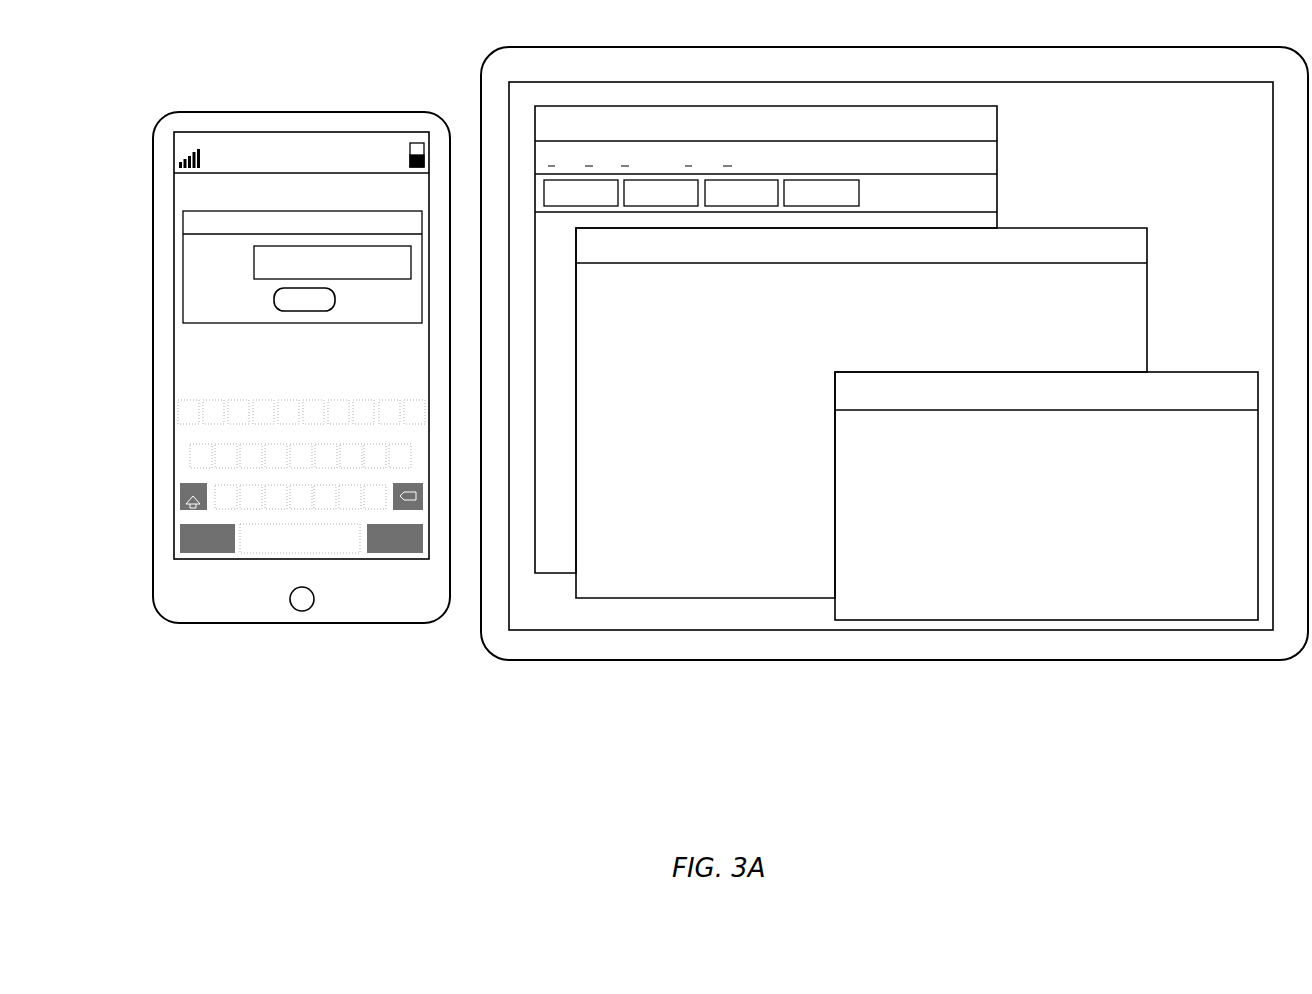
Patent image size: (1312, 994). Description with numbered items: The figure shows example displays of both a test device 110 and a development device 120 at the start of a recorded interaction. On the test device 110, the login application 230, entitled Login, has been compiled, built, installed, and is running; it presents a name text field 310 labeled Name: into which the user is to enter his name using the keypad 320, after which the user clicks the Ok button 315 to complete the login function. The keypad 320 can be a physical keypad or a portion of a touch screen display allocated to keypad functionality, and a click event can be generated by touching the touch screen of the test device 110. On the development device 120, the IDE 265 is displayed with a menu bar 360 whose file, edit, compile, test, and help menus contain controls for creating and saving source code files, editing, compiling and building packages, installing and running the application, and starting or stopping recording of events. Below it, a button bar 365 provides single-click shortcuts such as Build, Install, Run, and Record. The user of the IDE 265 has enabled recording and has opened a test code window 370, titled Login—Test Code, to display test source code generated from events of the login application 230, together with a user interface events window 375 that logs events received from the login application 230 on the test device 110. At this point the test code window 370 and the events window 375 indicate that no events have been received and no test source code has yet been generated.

The test device 110 is at (300, 112).
The development device 120 is at (912, 46).
The login application 230 is at (257, 208).
The IDE 265 is at (1004, 127).
The name text field 310 is at (254, 252).
The Ok button 315 is at (273, 288).
The keypad 320 is at (189, 389).
The menu bar 360 is at (1004, 159).
The button bar 365 is at (1004, 192).
The test code window 370 is at (1148, 250).
The user interface events window 375 is at (1188, 369).